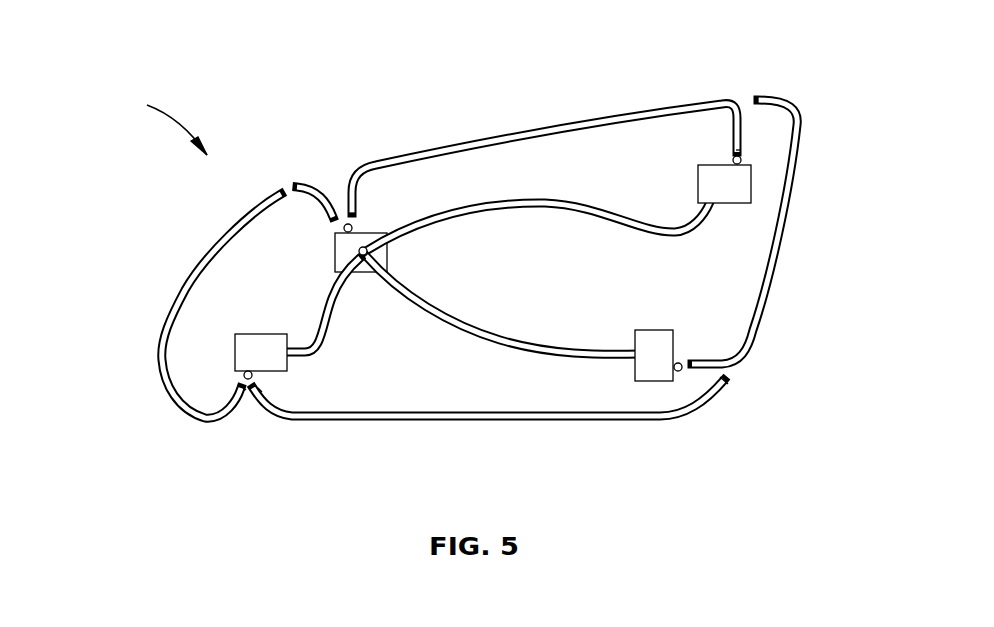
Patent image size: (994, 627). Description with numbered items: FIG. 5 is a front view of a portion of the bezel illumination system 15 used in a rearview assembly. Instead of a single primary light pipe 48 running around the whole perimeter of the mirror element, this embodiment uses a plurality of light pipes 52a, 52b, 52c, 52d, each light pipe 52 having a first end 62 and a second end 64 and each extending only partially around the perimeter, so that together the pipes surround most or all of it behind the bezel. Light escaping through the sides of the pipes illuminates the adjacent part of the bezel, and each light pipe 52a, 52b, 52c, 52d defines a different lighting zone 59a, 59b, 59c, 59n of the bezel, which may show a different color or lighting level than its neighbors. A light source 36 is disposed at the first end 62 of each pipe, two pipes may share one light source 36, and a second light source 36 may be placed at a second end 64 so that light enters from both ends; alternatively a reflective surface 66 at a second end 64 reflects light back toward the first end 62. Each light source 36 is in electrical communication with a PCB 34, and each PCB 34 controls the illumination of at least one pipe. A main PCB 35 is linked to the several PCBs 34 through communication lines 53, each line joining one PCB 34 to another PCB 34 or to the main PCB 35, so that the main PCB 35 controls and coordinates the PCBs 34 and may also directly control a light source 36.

The bezel illumination system 15 is at (162, 119).
The PCB 34 is at (235, 347).
The main PCB 35 is at (370, 230).
The light source 36 is at (345, 233).
The primary light pipe 48 is at (544, 108).
The light pipe 52 is at (494, 256).
The light pipe 52a is at (191, 304).
The light pipe 52b is at (488, 444).
The light pipe 52c is at (789, 232).
The light pipe 52d is at (544, 122).
The communication line 53 is at (523, 213).
The lighting zone 59a is at (230, 223).
The lighting zone 59b is at (572, 421).
The lighting zone 59c is at (798, 180).
The lighting zone 59n is at (560, 122).
The first end 62 is at (338, 210).
The second end 64 is at (346, 198).
The reflective surface 66 is at (724, 377).